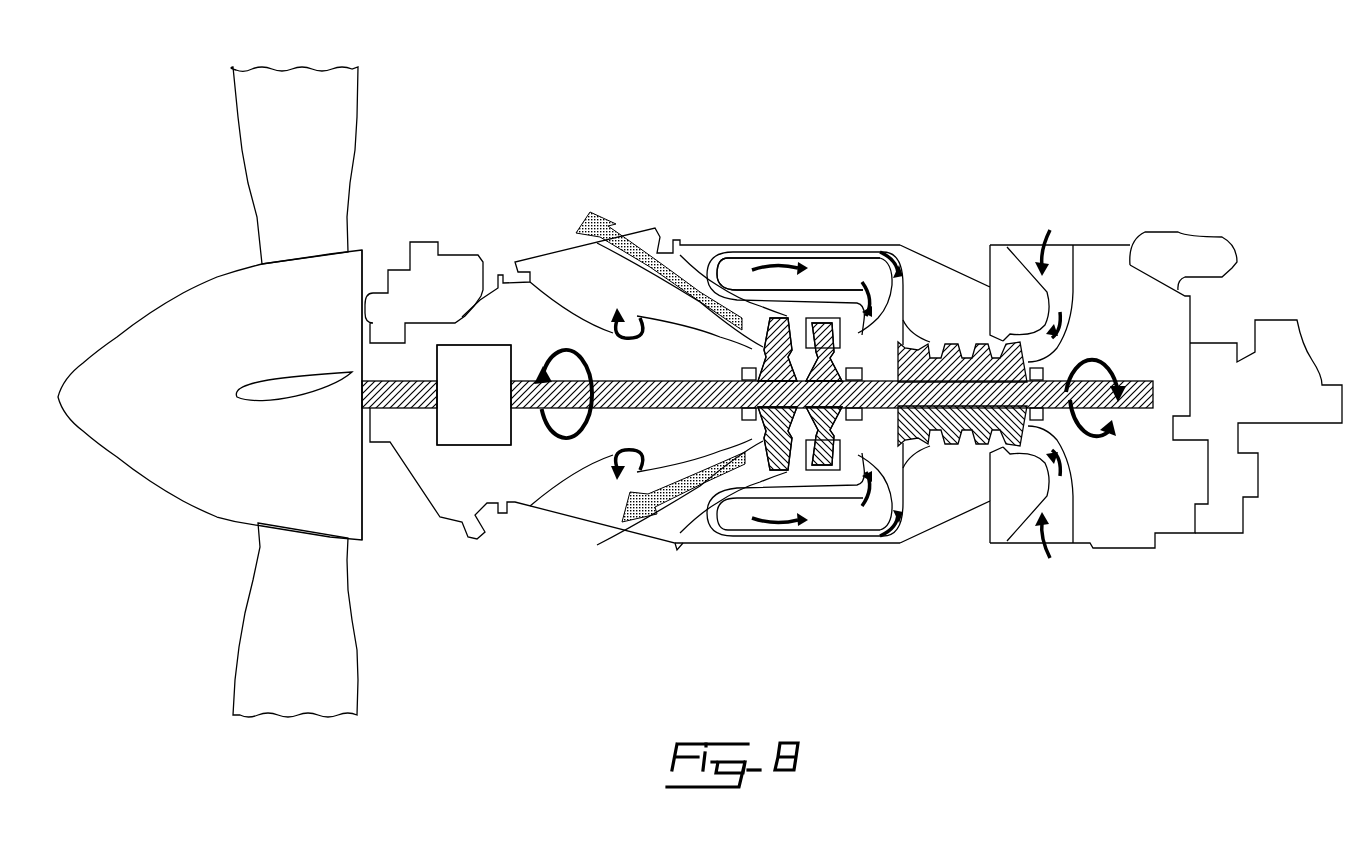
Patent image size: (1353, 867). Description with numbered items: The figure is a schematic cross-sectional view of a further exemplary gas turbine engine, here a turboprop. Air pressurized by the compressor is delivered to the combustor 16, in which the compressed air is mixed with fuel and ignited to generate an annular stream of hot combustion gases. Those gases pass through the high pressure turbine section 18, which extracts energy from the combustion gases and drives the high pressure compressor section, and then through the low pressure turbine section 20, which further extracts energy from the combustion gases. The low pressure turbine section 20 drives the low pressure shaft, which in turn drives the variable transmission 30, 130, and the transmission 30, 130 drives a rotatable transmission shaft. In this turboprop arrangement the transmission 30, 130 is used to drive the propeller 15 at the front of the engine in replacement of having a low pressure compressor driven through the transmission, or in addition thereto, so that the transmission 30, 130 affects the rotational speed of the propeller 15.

The propeller 15 is at (323, 157).
The variable transmission 30 is at (488, 360).
The variable transmission 130 is at (474, 395).
The low pressure turbine section 20 is at (775, 322).
The combustor 16 is at (815, 270).
The high pressure turbine section 18 is at (823, 327).